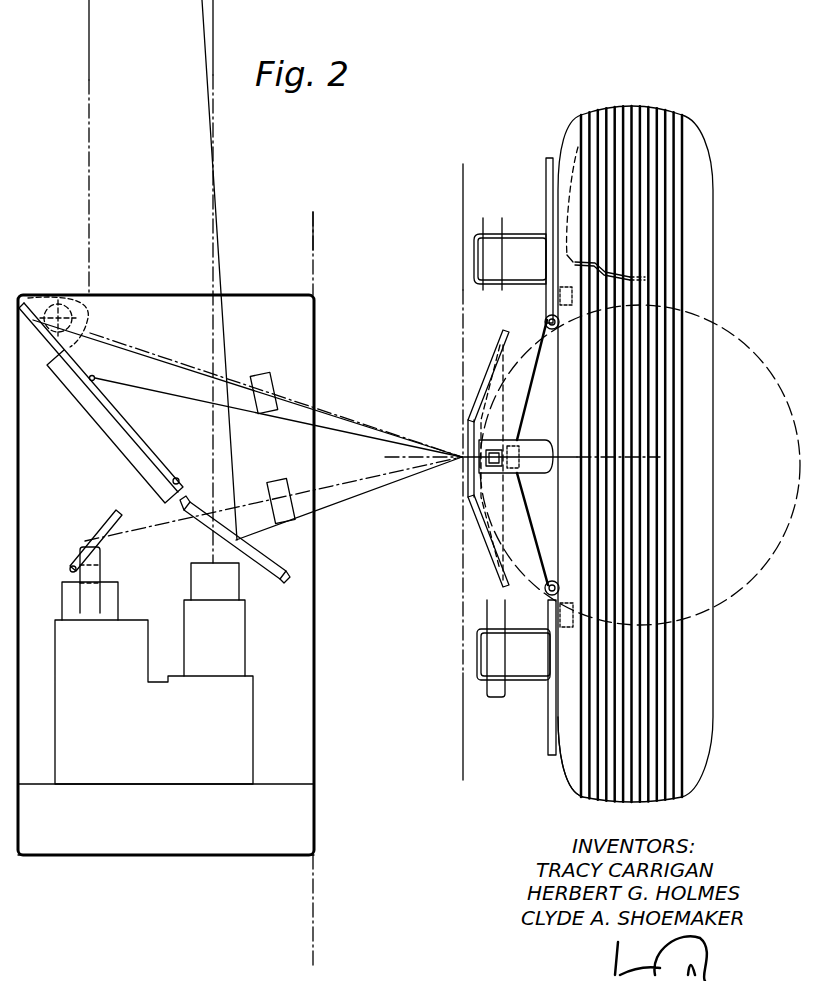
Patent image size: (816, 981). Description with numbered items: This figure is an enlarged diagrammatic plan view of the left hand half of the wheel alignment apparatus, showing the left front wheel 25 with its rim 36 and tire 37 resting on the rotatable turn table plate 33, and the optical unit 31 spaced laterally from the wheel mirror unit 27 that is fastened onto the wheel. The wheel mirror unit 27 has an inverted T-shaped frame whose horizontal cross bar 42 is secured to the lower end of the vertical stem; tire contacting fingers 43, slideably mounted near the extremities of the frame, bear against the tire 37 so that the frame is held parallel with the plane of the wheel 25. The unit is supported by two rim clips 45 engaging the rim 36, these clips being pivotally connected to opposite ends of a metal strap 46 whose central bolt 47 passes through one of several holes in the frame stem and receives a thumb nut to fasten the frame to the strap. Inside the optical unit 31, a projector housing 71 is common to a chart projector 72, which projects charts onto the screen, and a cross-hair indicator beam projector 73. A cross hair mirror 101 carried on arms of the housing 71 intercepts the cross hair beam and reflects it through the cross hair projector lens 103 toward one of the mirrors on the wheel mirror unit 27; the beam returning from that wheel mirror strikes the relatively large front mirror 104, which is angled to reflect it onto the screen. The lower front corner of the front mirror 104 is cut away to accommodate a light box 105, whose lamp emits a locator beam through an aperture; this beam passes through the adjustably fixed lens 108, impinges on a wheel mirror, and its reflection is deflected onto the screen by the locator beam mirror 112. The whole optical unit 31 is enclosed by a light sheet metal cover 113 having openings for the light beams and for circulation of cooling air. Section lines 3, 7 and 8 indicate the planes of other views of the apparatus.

The section line 3- 3 is at (318, 229).
The section line 7- 7 is at (455, 180).
The section line 8- 8 is at (402, 447).
The left front wheel 25 is at (561, 778).
The wheel mirror unit 27 is at (461, 500).
The optical unit 31 is at (333, 820).
The turn table plate 33 is at (720, 568).
The rim 36 is at (566, 150).
The tire 37 is at (580, 140).
The cross bar 42 is at (488, 597).
The tire contacting fingers 43 is at (546, 185).
The rim clips 45 is at (548, 320).
The metal strap 46 is at (532, 374).
The central bolt 47 is at (548, 473).
The projector housing 71 is at (253, 712).
The chart projector 72 is at (240, 650).
The cross-hair indicator beam projector 73 is at (115, 602).
The cross hair mirror 101 is at (110, 515).
The cross hair projector lens 103 is at (278, 483).
The front mirror 104 is at (105, 408).
The light box 105 is at (73, 291).
The lens 108 is at (268, 377).
The locator beam mirror 112 is at (205, 525).
The sheet metal cover 113 is at (228, 855).